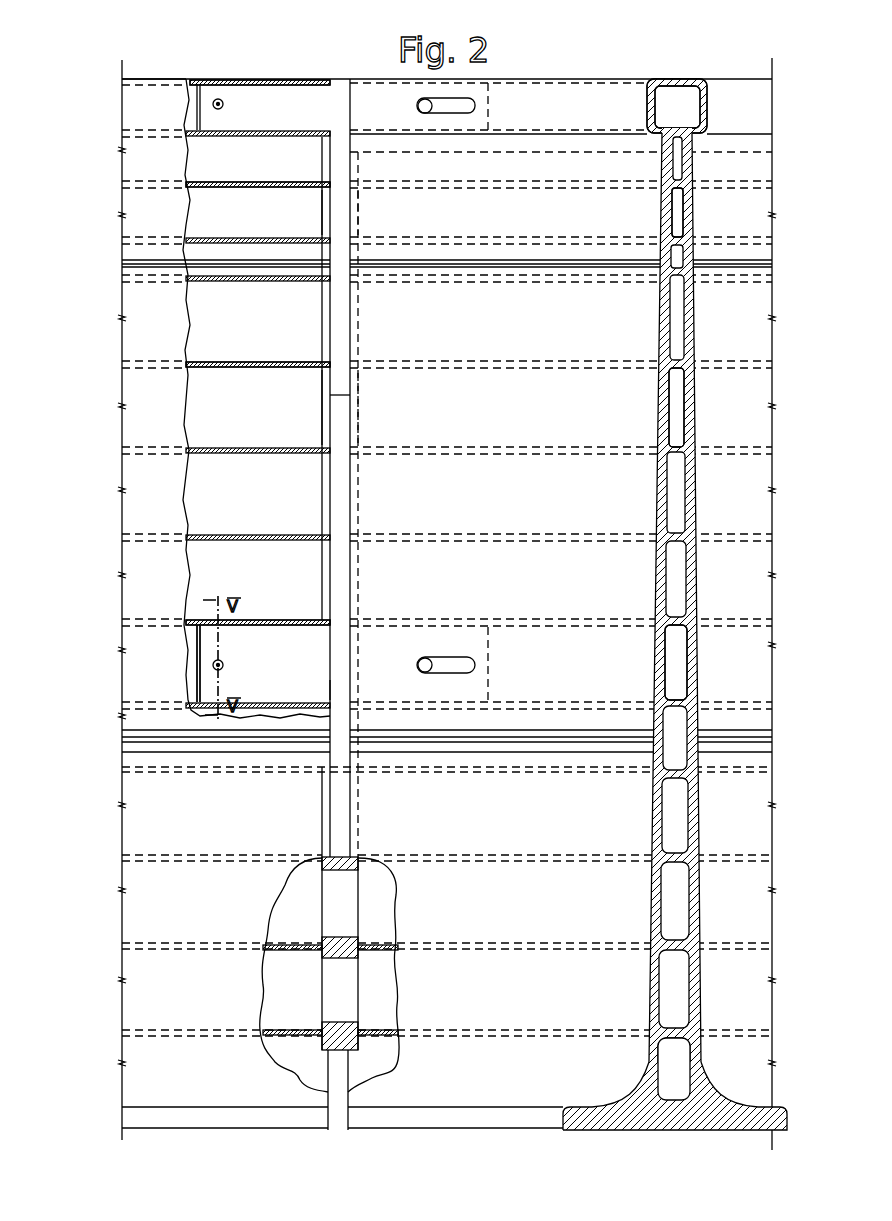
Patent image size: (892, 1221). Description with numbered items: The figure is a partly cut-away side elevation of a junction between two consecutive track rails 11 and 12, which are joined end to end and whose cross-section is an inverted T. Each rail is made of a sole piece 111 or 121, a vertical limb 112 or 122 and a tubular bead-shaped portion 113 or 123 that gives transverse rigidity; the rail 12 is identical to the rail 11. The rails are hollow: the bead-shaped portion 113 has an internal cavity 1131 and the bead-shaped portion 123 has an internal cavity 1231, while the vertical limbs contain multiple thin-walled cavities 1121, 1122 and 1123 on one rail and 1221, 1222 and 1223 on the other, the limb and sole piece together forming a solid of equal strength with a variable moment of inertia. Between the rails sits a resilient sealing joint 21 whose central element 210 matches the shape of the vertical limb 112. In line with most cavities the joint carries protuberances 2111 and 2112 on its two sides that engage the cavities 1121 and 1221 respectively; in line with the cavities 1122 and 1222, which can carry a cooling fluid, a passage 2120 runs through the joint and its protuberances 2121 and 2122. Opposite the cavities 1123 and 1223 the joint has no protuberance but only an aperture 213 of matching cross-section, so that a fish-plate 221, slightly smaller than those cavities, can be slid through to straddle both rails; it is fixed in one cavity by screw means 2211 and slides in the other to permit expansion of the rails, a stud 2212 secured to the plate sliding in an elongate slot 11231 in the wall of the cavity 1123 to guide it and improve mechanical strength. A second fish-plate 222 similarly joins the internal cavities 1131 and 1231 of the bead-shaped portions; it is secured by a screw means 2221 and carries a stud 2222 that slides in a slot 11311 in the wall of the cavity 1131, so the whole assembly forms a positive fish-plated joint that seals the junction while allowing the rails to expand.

The rail 11 is at (628, 498).
The sole piece 111 is at (755, 1115).
The vertical limb 112 is at (778, 432).
The cavity 1121 is at (490, 205).
The cavity 1122 is at (493, 385).
The cavity 1123 is at (755, 650).
The elongate slot 11231 is at (450, 668).
The tubular bead-shaped portion 113 is at (553, 80).
The internal cavity 1131 is at (592, 98).
The slot 11311 is at (470, 118).
The rail 12 is at (216, 1134).
The sole piece 121 is at (185, 1110).
The vertical limb 122 is at (120, 437).
The cavity 1221 is at (205, 213).
The cavity 1222 is at (200, 400).
The cavity 1223 is at (121, 642).
The bead-shaped portion 123 is at (133, 80).
The internal cavity 1231 is at (165, 98).
The joint 21 is at (340, 1076).
The central element 210 is at (345, 935).
The protuberance 2111 is at (358, 222).
The protuberance 2112 is at (322, 218).
The passage 2120 is at (355, 410).
The protuberance 2121 is at (360, 424).
The protuberance 2122 is at (322, 428).
The aperture 213 is at (340, 688).
The fish-plate 221 is at (205, 680).
The screw means 2211 is at (226, 660).
The stud 2212 is at (418, 662).
The fish-plate 222 is at (338, 100).
The screw means 2221 is at (224, 105).
The stud 2222 is at (418, 106).